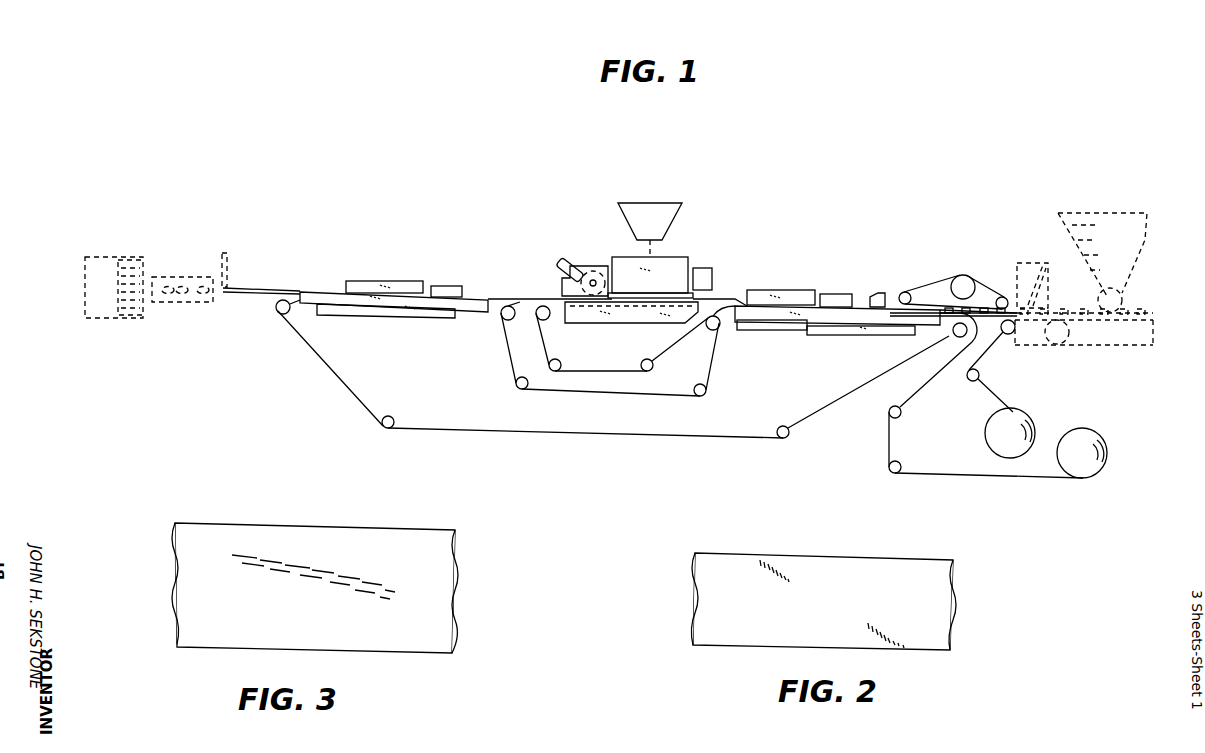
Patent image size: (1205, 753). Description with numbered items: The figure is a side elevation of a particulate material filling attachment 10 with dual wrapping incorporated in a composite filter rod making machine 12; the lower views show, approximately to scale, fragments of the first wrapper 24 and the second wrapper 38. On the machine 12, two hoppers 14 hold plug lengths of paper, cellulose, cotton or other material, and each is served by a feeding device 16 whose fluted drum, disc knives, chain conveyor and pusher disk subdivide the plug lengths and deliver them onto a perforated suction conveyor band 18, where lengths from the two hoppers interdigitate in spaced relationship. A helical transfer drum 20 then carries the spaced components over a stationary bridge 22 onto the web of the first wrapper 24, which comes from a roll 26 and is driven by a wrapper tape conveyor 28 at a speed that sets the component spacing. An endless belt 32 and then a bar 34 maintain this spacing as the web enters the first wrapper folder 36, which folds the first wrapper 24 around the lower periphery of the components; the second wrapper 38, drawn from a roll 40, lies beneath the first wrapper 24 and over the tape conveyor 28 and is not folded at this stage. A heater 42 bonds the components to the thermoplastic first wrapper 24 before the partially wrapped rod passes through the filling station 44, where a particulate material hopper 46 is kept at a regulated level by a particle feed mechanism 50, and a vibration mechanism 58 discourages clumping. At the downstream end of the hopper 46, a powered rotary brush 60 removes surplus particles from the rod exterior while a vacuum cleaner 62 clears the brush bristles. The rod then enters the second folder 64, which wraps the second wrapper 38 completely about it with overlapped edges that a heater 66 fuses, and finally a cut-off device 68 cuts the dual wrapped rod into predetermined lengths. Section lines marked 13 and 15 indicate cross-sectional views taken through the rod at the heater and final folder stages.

In FIG. 1, the particulate material filling attachment 10 is at (702, 196).
In FIG. 1, the filter rod making machine 12 is at (838, 243).
In FIG. 1, the section line 13- 13 is at (780, 240).
In FIG. 1, the hoppers 14 is at (628, 235).
In FIG. 1, the section line 15- 15 is at (445, 233).
In FIG. 1, the feeding devices 16 is at (382, 232).
In FIG. 1, the perforated suction conveyor band 18 is at (1110, 326).
In FIG. 1, the helical transfer drum 20 is at (1022, 263).
In FIG. 1, the stationary bridge 22 is at (1045, 340).
In FIG. 1, the first wrapper 24 is at (1000, 318).
In FIG. 2, the first wrapper 24 is at (898, 540).
In FIG. 1, the roll 26 is at (987, 431).
In FIG. 1, the wrapper tape conveyor 28 is at (880, 383).
In FIG. 1, the endless belt 32 is at (933, 284).
In FIG. 1, the bar 34 is at (876, 293).
In FIG. 1, the first wrapper folder 36 is at (828, 294).
In FIG. 1, the second wrapper 38 is at (926, 372).
In FIG. 3, the second wrapper 38 is at (412, 533).
In FIG. 1, the roll 40 is at (1086, 440).
In FIG. 1, the heater 42 is at (790, 290).
In FIG. 1, the particulate material filling station 44 is at (666, 250).
In FIG. 1, the particulate material hopper 46 is at (697, 248).
In FIG. 1, the particle feed mechanism 50 is at (643, 204).
In FIG. 1, the vibration mechanism 58 is at (712, 279).
In FIG. 1, the powered rotary brush 60 is at (575, 283).
In FIG. 1, the vacuum type cleaner 62 is at (559, 262).
In FIG. 1, the second folder 64 is at (450, 286).
In FIG. 1, the heater 66 is at (355, 281).
In FIG. 1, the cut-off device 68 is at (229, 258).